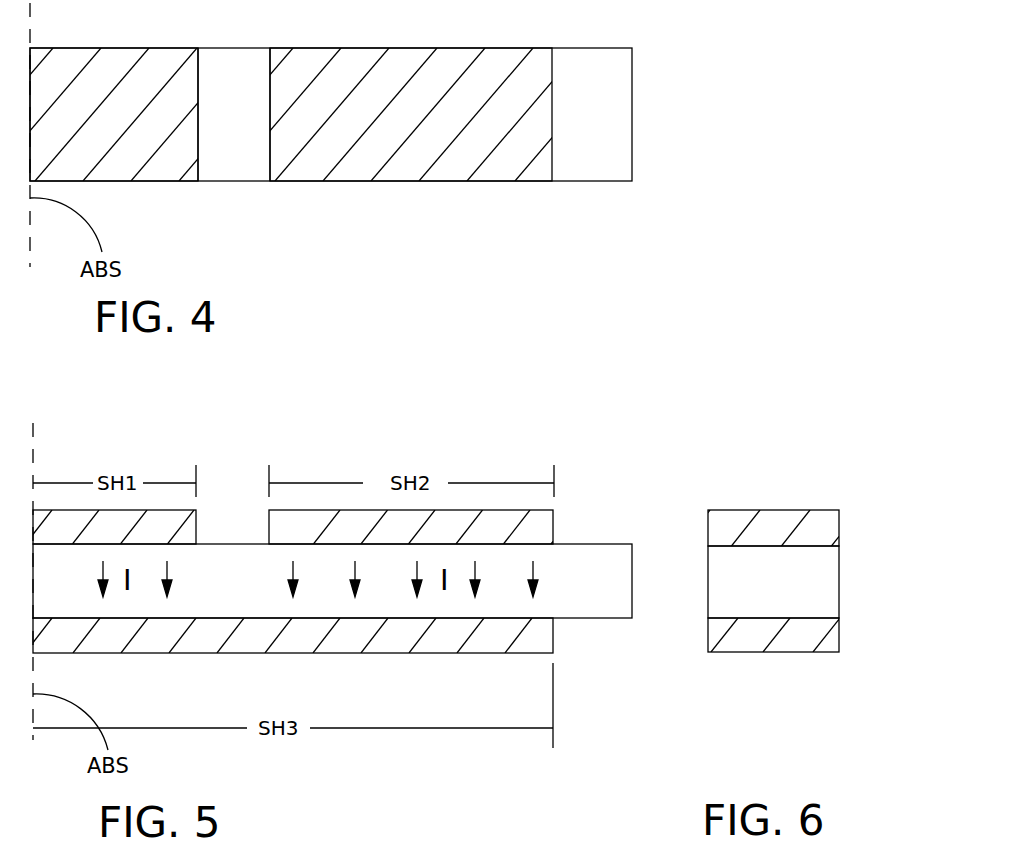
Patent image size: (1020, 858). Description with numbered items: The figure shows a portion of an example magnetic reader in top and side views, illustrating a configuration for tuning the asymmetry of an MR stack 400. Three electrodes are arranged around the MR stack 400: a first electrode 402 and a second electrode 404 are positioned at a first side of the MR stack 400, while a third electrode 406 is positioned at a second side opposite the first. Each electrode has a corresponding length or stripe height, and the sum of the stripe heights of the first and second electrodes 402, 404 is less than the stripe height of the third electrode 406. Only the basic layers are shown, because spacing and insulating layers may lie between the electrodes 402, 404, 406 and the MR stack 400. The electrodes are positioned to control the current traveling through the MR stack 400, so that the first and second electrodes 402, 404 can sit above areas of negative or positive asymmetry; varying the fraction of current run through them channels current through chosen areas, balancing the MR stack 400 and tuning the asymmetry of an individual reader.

In FIG. 4, the MR stack 400 is at (238, 72).
In FIG. 5, the MR stack 400 is at (235, 558).
In FIG. 6, the MR stack 400 is at (818, 581).
In FIG. 4, the first electrode 402 is at (95, 72).
In FIG. 5, the first electrode 402 is at (163, 517).
In FIG. 4, the second electrode 404 is at (397, 72).
In FIG. 5, the second electrode 404 is at (542, 517).
In FIG. 6, the second electrode 404 is at (723, 523).
In FIG. 5, the third electrode 406 is at (393, 643).
In FIG. 6, the third electrode 406 is at (735, 643).